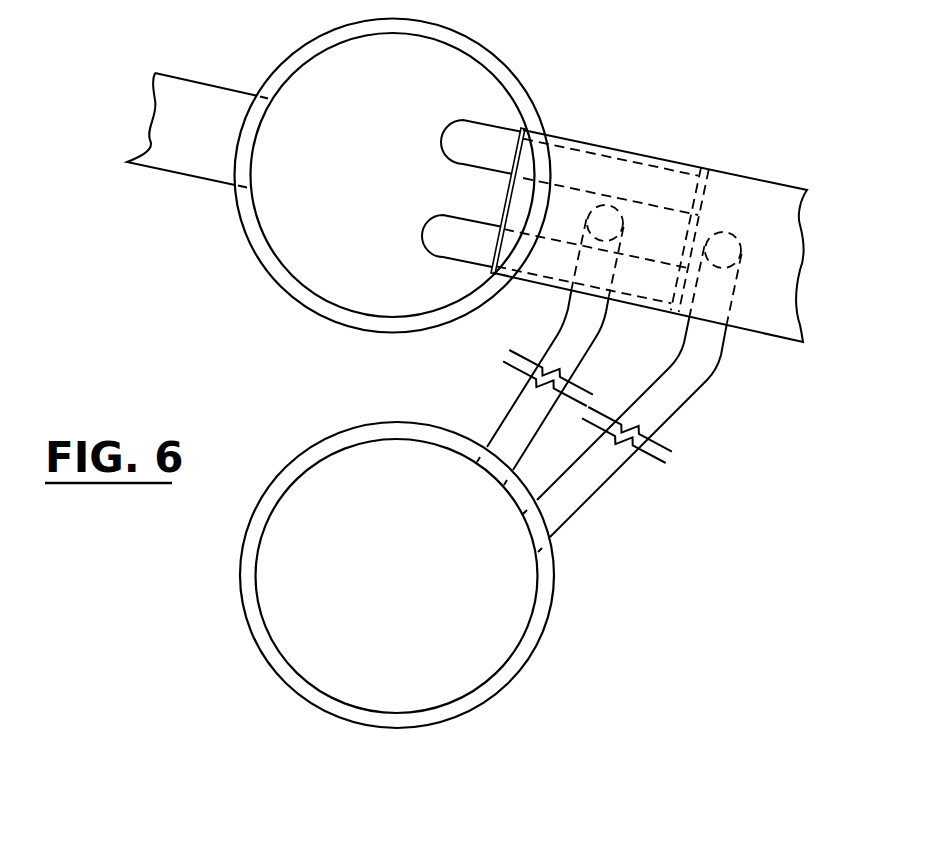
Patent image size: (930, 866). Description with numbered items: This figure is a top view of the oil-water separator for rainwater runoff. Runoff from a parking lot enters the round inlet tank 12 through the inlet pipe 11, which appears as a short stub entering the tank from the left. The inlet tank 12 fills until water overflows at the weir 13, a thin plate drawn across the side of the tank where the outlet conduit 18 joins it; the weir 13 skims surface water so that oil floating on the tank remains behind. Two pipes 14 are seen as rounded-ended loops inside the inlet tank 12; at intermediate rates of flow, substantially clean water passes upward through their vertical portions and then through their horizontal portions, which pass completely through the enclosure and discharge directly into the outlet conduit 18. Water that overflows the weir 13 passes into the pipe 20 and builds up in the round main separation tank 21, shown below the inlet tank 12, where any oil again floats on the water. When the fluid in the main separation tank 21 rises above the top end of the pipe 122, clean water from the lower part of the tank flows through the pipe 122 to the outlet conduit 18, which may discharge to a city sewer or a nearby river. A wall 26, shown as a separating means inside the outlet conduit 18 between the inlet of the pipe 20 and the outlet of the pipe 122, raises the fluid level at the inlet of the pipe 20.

The inlet pipe 11 is at (178, 173).
The inlet tank 12 is at (497, 64).
The weir 13 is at (510, 180).
The pipes 14 is at (463, 155).
The outlet conduit 18 is at (762, 148).
The pipe 20 is at (508, 416).
The main separation tank 21 is at (260, 633).
The wall 26 is at (697, 236).
The pipe 122 is at (664, 413).